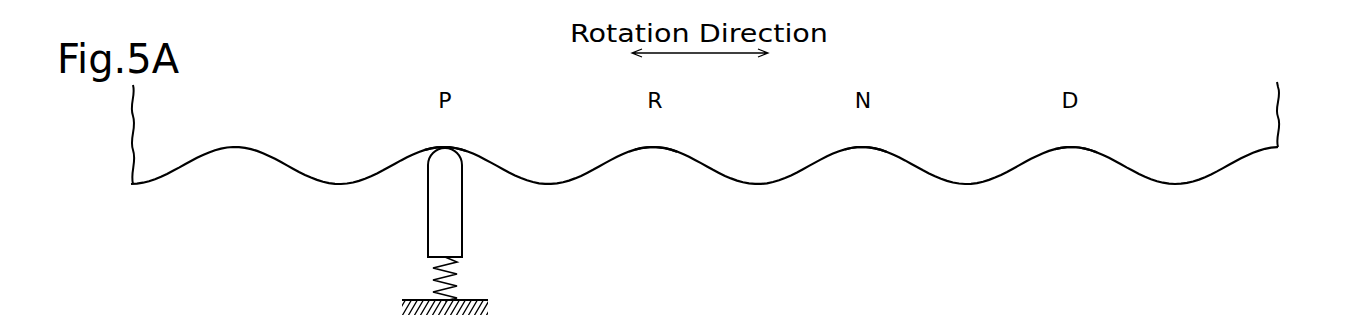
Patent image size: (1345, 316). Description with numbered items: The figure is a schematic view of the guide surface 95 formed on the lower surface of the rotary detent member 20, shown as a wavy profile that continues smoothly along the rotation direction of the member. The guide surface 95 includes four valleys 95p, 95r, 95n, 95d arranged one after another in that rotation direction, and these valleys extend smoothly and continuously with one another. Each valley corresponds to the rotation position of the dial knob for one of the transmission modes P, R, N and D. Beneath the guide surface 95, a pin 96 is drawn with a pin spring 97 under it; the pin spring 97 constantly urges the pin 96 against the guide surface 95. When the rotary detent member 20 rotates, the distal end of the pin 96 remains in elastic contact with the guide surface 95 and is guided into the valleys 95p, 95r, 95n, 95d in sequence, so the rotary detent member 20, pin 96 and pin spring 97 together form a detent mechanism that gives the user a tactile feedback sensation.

The rotary detent member 20 is at (1282, 118).
The guide surface 95 is at (260, 164).
The valley 95p is at (472, 160).
The valley 95r is at (654, 148).
The valley 95n is at (871, 148).
The valley 95d is at (1072, 148).
The pin 96 is at (458, 207).
The pin spring 97 is at (455, 270).